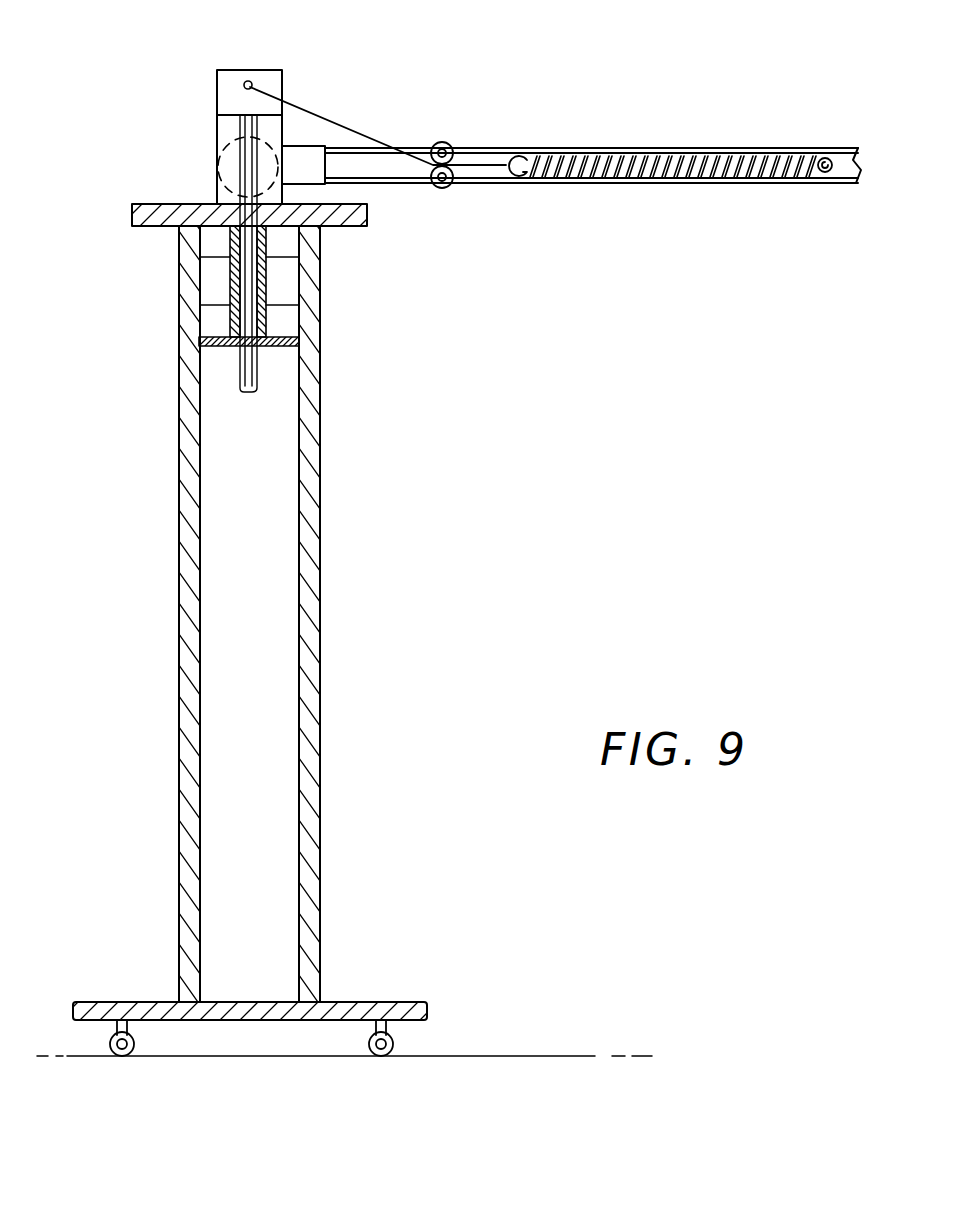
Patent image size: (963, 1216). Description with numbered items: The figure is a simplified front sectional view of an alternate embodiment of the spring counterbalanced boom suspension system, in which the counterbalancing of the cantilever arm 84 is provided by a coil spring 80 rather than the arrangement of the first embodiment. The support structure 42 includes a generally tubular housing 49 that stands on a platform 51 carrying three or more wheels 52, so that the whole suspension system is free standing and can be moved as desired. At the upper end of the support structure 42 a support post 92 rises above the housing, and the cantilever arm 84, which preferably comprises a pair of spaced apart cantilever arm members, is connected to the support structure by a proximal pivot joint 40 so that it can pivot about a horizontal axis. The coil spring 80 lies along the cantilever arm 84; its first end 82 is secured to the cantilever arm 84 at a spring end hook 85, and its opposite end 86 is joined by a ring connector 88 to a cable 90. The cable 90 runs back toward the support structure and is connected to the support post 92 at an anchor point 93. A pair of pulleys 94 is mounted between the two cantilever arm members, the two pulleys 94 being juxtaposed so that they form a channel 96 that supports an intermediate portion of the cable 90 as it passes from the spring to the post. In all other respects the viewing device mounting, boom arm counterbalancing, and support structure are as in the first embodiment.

The proximal pivot joint 40 is at (238, 137).
The support structure 42 is at (337, 689).
The tubular housing 49 is at (178, 655).
The platform 51 is at (373, 1002).
The wheels 52 is at (108, 1040).
The coil spring 80 is at (655, 148).
The first end of coil spring 82 is at (790, 182).
The cantilever arm 84 is at (553, 185).
The spring end hook 85 is at (822, 158).
The opposite end of coil spring 86 is at (572, 156).
The ring connector 88 is at (513, 156).
The cable 90 is at (333, 123).
The support post 92 is at (218, 93).
The cable anchor hole 93 is at (248, 81).
The pulleys 94 is at (442, 142).
The channel 96 is at (431, 169).